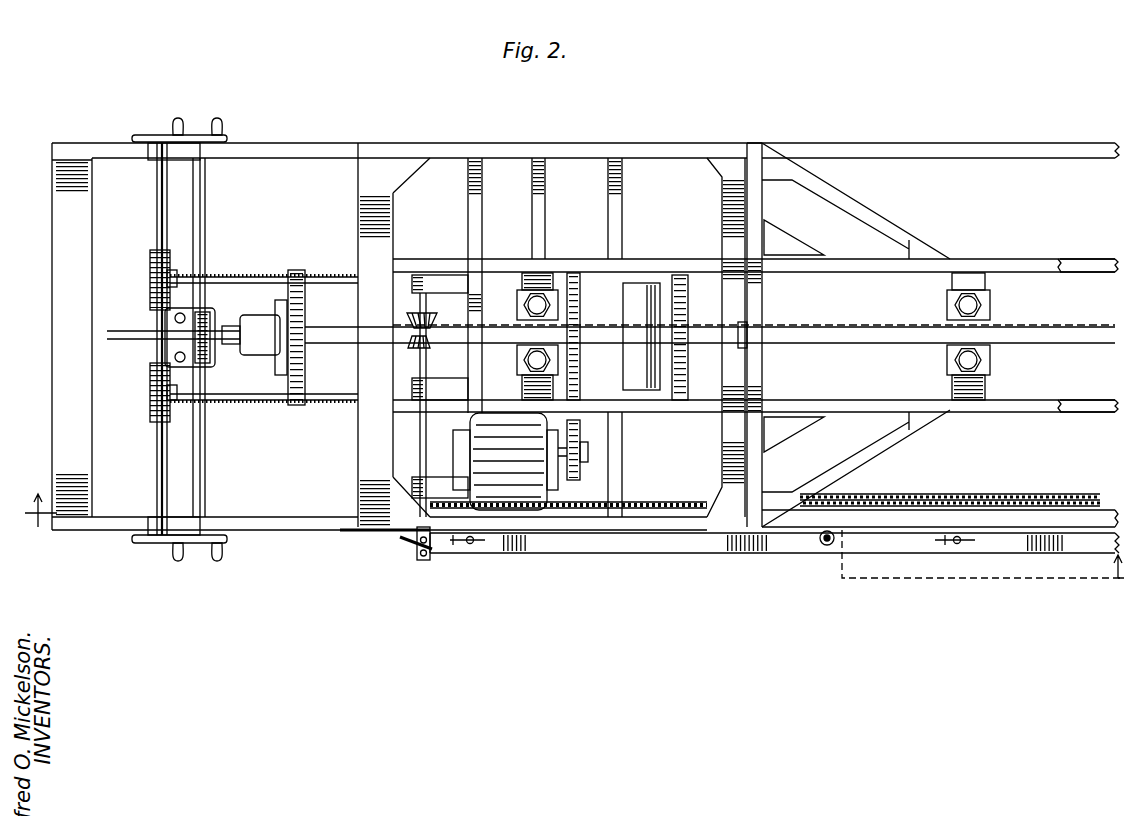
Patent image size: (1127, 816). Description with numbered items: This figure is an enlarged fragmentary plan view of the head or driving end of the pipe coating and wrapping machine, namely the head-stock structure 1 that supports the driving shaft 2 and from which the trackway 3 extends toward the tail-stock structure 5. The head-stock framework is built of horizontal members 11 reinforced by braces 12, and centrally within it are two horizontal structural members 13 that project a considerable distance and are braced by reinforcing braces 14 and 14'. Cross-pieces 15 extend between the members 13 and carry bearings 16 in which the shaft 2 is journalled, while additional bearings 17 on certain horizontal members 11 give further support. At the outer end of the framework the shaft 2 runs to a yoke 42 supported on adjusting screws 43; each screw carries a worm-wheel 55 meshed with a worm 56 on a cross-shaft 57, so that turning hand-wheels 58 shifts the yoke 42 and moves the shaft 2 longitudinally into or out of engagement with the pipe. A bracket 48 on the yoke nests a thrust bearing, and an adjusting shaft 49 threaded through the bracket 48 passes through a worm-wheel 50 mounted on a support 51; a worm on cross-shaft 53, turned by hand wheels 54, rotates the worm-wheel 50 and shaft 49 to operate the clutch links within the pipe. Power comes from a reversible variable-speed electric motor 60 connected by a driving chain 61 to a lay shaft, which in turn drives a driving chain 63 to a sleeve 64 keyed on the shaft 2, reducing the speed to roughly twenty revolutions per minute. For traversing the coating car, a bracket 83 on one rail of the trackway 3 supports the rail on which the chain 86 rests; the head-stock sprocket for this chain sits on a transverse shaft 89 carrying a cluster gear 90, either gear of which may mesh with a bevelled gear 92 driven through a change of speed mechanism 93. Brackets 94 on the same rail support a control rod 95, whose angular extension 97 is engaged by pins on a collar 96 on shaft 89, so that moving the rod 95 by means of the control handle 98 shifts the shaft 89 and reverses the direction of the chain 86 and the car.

The head-stock structure 1 is at (371, 542).
The driving shaft 2 is at (333, 345).
The trackway 3 is at (985, 143).
The tail-stock structure 5 is at (574, 545).
The horizontal members 11 is at (507, 150).
The braces 12 is at (313, 522).
The horizontal structural members 13 is at (1085, 265).
The reinforcing braces 14 is at (754, 326).
The reinforcing braces 14' is at (856, 335).
The cross-pieces 15 is at (530, 275).
The bearings 16 is at (528, 358).
The bearings 17 is at (745, 330).
The yoke 42 is at (307, 292).
The adjusting screws 43 is at (320, 276).
The bracket 48 is at (258, 318).
The adjusting shaft 49 is at (137, 342).
The worm-wheel 50 is at (212, 324).
The support 51 is at (172, 334).
The cross-shaft 53 is at (207, 452).
The hand wheels 54 is at (227, 137).
The worm-wheel 55 is at (175, 276).
The worm 56 is at (155, 252).
The cross-shaft 57 is at (157, 205).
The hand-wheels 58 is at (152, 545).
The electric motor 60 is at (488, 450).
The driving chain 61 is at (582, 440).
The driving chain 63 is at (763, 362).
The sleeve 64 is at (590, 325).
The bracket 83 is at (975, 494).
The chain 86 is at (1068, 510).
The shaft 89 is at (415, 452).
The cluster gear 90 is at (432, 318).
The bevelled gear 92 is at (428, 350).
The change of speed mechanism 93 is at (660, 378).
The brackets 94 is at (972, 545).
The control rod 95 is at (627, 545).
The collar 96 is at (427, 562).
The angular extension 97 is at (405, 548).
The control handle 98 is at (825, 547).